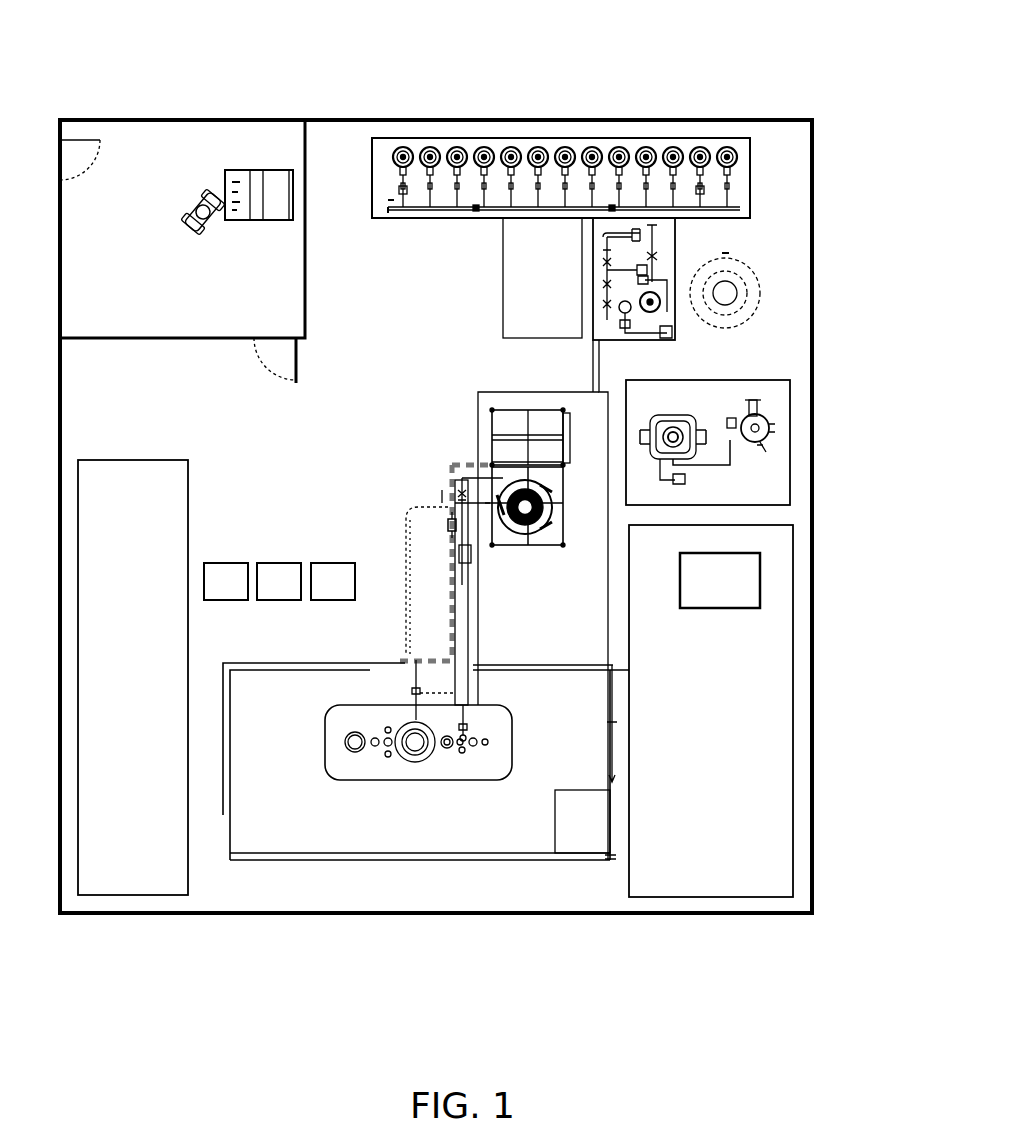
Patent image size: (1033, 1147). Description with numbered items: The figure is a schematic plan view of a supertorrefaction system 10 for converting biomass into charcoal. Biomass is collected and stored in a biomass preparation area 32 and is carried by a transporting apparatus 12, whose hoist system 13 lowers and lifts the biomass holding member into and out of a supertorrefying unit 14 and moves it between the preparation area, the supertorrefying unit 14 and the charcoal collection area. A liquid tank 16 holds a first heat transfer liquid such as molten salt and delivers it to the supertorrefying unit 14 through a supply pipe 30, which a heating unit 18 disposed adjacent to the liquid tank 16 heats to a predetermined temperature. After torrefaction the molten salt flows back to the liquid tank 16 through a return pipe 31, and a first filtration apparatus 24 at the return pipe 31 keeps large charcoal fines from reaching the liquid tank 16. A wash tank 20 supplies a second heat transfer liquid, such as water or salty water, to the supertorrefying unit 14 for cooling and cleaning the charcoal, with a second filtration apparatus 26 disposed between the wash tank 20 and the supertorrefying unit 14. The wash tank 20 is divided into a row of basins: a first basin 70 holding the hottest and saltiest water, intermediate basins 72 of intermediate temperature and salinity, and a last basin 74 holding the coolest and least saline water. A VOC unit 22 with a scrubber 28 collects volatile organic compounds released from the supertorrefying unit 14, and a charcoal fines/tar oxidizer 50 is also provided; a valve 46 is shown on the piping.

The supertorrefaction system 10 is at (846, 63).
The transporting apparatus 12 is at (497, 390).
The hoist system 13 is at (488, 427).
The supertorrefying unit 14 is at (468, 481).
The liquid tank 16 is at (415, 782).
The heating unit 18 is at (405, 625).
The wash tank 20 is at (621, 128).
The volatile organic compounds (VOC) unit 22 is at (750, 442).
The first filtration apparatus 24 is at (465, 478).
The second filtration apparatus 26 is at (678, 246).
The scrubber 28 is at (765, 425).
The supply pipe 30 is at (524, 532).
The return pipe 31 is at (474, 620).
The biomass preparation area 32 is at (188, 498).
The valve 46 is at (450, 525).
The charcoal fines/tar oxidizer 50 is at (718, 610).
The first basin 70 is at (398, 142).
The basins 72 is at (513, 140).
The last basin 74 is at (737, 140).